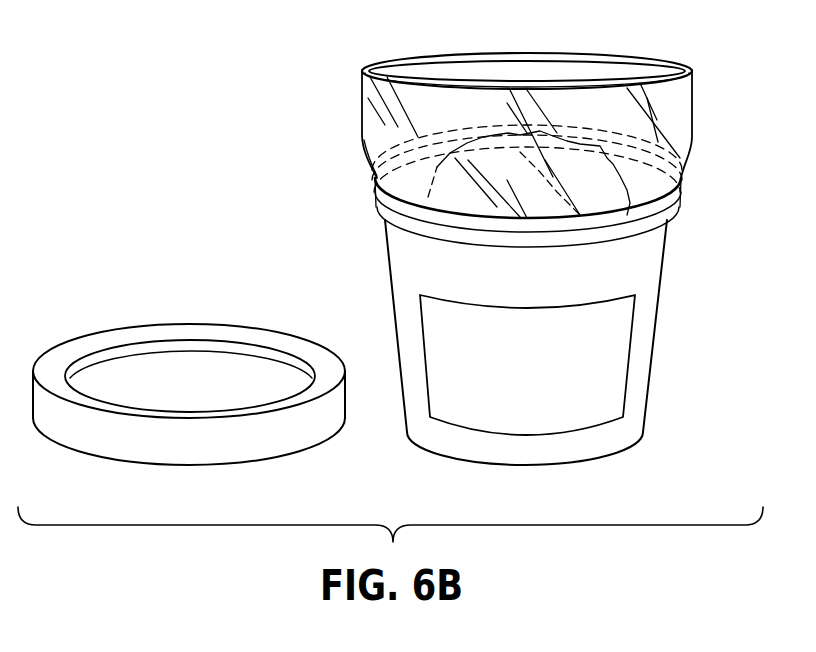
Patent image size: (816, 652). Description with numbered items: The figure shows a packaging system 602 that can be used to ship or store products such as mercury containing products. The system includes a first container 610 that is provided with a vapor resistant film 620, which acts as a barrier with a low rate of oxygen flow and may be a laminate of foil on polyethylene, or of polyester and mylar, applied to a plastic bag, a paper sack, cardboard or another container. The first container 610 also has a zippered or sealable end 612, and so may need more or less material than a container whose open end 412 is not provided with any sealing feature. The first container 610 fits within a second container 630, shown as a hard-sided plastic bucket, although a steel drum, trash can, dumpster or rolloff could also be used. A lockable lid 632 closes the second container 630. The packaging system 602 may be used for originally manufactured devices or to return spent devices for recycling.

The packaging system 602 is at (145, 110).
The first container 610 is at (684, 148).
The bag rim 612 is at (603, 55).
The vapor resistant film 620 is at (367, 146).
The open end 412 is at (603, 190).
The second container 630 is at (656, 322).
The lockable lid 632 is at (93, 333).